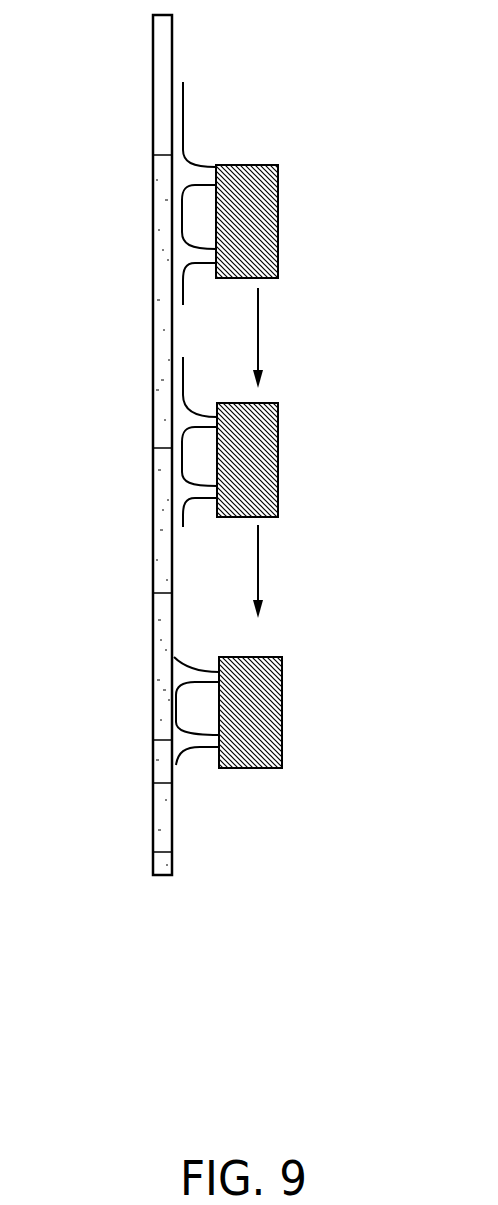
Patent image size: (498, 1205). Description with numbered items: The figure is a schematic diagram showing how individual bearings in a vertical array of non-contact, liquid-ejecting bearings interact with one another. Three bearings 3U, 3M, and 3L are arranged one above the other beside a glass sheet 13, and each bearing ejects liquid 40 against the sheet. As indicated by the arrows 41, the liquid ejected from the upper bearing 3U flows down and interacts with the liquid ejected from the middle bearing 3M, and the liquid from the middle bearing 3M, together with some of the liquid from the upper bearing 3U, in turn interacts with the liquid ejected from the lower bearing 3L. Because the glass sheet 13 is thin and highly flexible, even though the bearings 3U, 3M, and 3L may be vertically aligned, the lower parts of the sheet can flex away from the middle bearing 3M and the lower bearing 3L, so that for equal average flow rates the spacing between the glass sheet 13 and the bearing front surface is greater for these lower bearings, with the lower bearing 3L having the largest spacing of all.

The glass sheet 13 is at (152, 862).
The upper bearing 3U is at (260, 215).
The middle bearing 3M is at (258, 465).
The lower bearing 3L is at (260, 707).
The liquid 40 is at (199, 178).
The arrows 41 is at (258, 342).